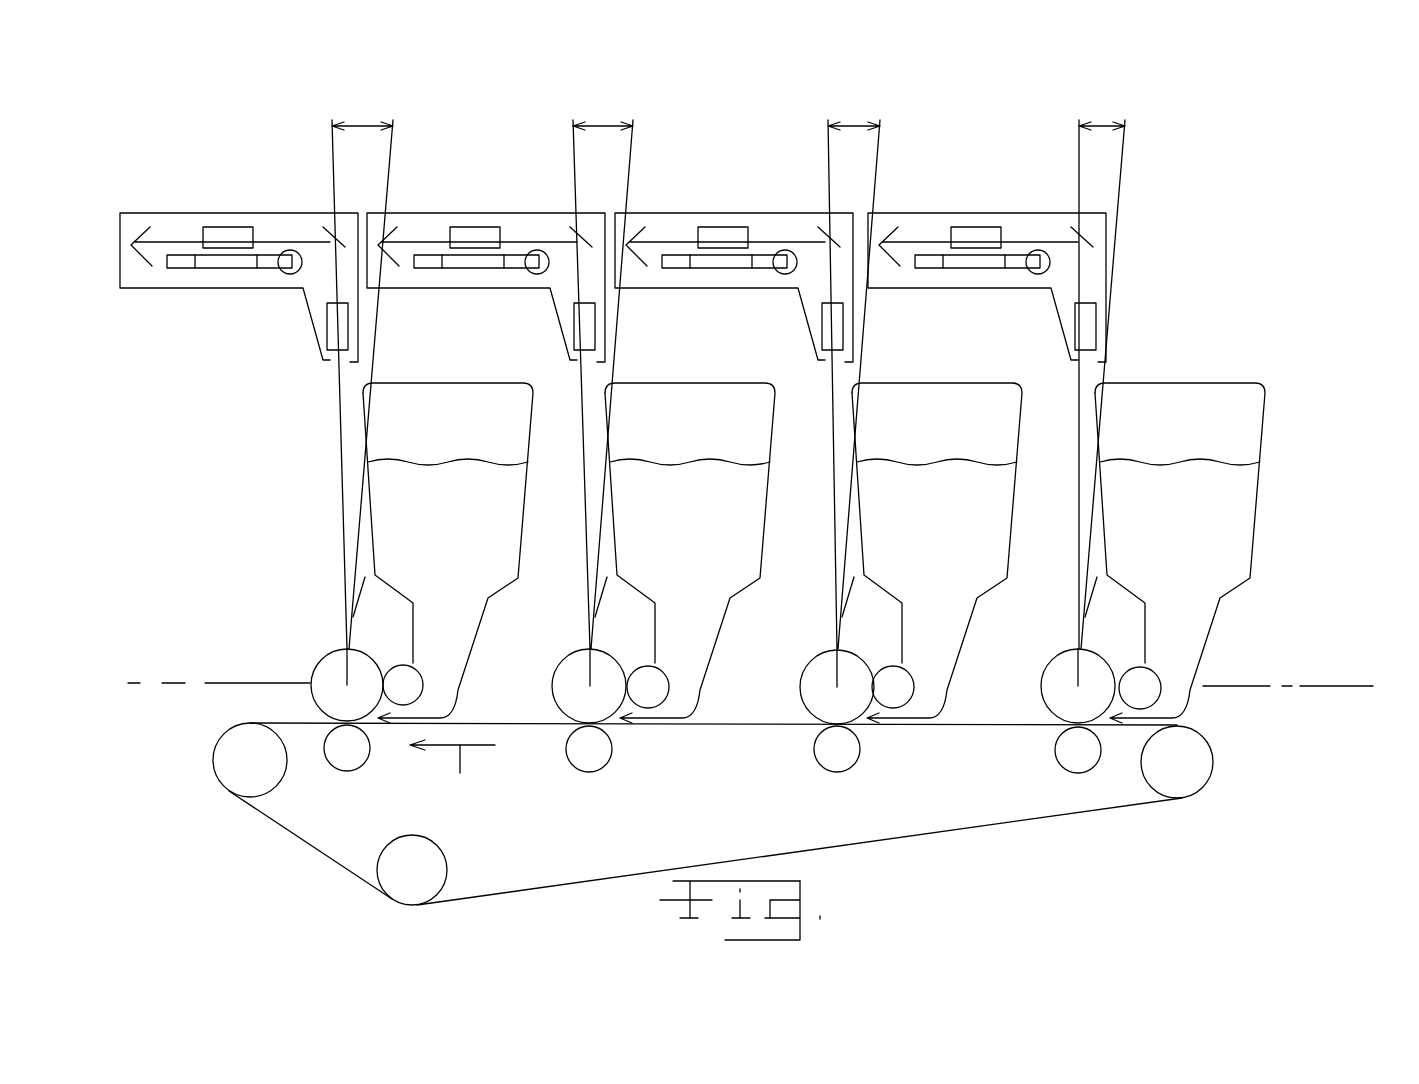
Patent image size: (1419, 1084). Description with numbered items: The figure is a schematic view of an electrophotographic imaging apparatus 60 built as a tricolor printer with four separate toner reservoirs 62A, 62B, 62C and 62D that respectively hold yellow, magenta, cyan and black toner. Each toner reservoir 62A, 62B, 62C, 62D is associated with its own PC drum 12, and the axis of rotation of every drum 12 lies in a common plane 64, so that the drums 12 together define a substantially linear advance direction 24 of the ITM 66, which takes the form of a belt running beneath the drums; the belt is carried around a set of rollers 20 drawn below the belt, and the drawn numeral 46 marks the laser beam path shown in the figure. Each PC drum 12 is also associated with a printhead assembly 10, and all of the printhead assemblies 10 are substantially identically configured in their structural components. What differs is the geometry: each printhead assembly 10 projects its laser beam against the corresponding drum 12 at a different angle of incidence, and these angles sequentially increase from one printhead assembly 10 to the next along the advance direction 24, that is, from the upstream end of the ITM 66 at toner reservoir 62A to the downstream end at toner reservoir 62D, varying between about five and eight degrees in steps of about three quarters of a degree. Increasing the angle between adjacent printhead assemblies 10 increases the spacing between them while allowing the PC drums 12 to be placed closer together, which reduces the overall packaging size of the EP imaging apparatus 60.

The printhead assembly 10 is at (200, 198).
The PC drum 12 is at (320, 662).
The backing roller 20 is at (343, 772).
The advance direction 24 is at (452, 780).
The laser beam 46 is at (343, 487).
The EP imaging apparatus 60 is at (1262, 88).
The toner reservoir 62A is at (1193, 383).
The toner reservoir 62B is at (930, 382).
The toner reservoir 62C is at (685, 382).
The toner reservoir 62D is at (445, 382).
The common plane 64 is at (150, 680).
The ITM 66 is at (990, 827).